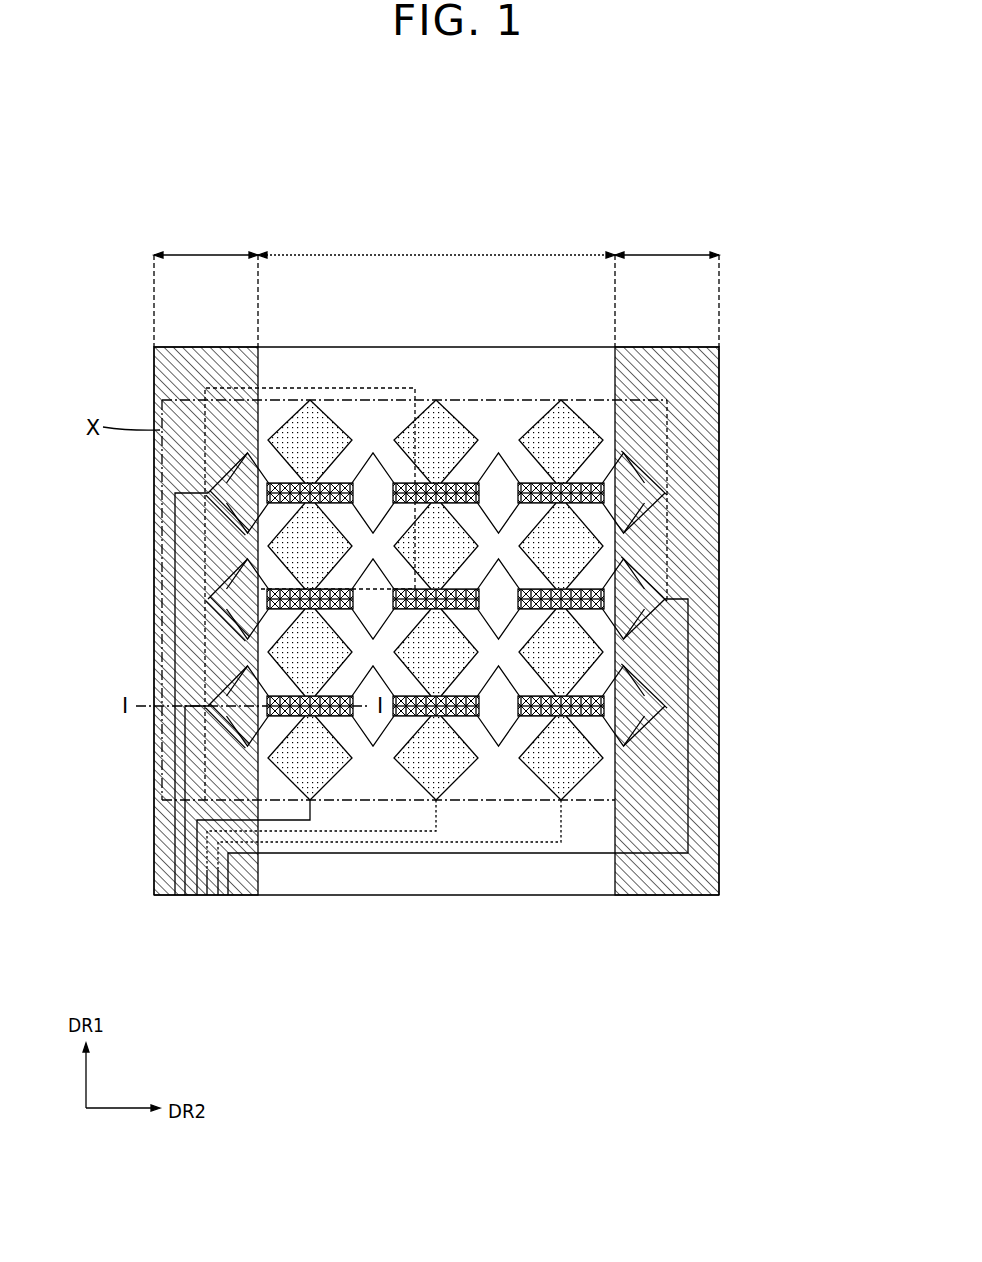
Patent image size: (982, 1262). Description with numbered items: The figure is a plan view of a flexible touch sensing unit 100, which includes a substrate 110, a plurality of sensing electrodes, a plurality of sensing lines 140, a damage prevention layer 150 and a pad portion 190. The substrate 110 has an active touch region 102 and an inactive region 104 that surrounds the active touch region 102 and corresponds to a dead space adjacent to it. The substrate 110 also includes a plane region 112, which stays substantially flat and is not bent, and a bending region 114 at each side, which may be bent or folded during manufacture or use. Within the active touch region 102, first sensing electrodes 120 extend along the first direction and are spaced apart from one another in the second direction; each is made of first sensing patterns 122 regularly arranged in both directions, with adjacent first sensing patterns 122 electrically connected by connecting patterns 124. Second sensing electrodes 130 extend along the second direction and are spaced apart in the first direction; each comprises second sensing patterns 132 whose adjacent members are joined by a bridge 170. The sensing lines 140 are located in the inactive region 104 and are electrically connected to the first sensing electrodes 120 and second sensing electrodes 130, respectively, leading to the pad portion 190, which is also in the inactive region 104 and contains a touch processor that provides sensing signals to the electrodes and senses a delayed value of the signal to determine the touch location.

The flexible touch sensing unit 100 is at (417, 170).
The active touch region 102 is at (667, 577).
The inactive region 104 is at (437, 880).
The substrate 110 is at (562, 897).
The plane region 112 is at (436, 244).
The bending region 114 is at (436, 288).
The first sensing electrodes 120 is at (538, 543).
The first sensing patterns 122 is at (568, 423).
The connecting patterns 124 is at (578, 494).
The second sensing electrodes 130 is at (205, 600).
The second sensing patterns 132 is at (645, 716).
The sensing lines 140 is at (175, 790).
The damage prevention layer 150 is at (160, 368).
The bridge 170 is at (327, 483).
The pad portion 190 is at (162, 886).